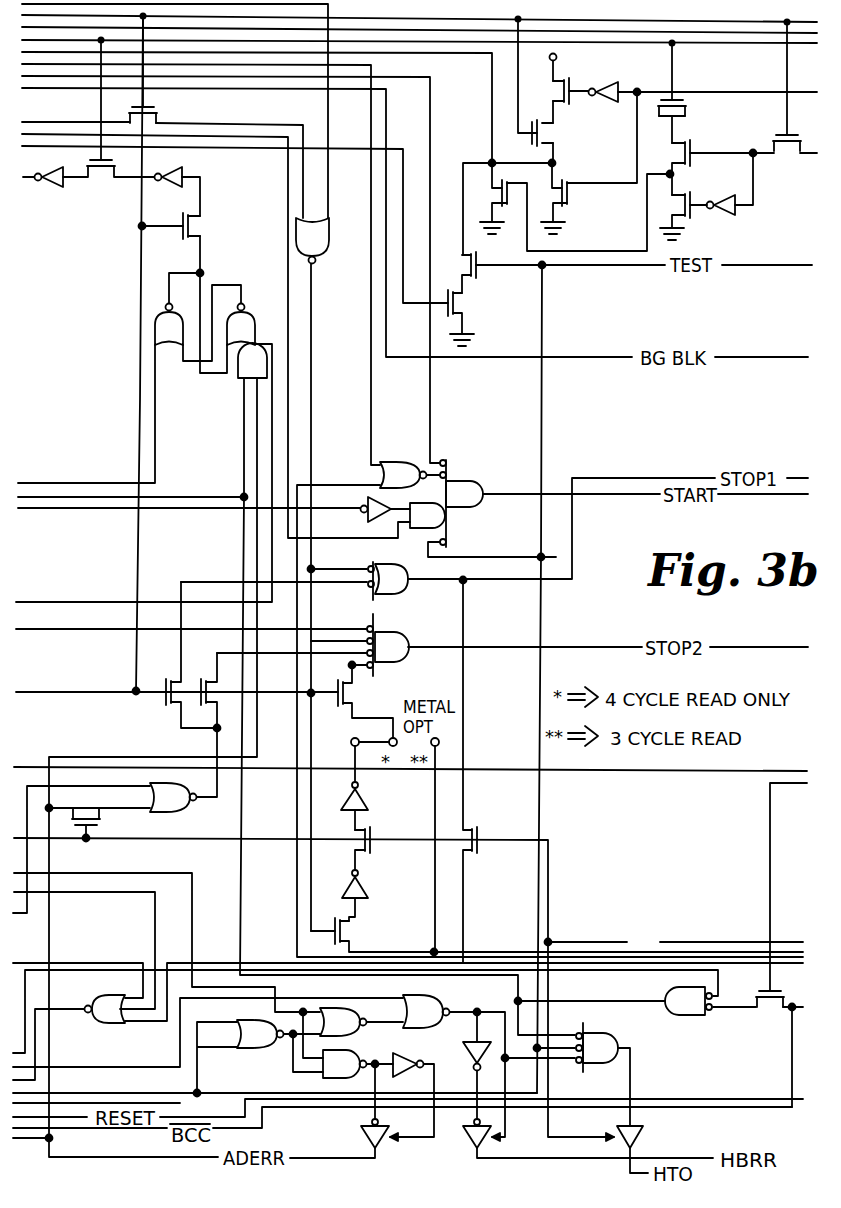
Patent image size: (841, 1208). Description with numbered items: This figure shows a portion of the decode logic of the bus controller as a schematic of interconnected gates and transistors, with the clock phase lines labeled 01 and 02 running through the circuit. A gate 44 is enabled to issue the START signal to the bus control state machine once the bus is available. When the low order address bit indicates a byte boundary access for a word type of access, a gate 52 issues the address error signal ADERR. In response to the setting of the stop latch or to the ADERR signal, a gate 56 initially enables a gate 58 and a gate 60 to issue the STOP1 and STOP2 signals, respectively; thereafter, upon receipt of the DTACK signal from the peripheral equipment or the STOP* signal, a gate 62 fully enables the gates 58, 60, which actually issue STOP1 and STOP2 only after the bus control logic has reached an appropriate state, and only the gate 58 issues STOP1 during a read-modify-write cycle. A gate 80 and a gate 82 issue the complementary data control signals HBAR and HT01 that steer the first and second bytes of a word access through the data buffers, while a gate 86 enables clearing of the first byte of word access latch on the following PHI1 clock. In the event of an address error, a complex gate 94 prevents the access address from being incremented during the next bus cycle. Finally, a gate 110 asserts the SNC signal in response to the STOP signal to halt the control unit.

The gate 44 is at (483, 470).
The gate 52 is at (355, 1054).
The gate 56 is at (183, 813).
The gate 58 is at (410, 595).
The gate 60 is at (406, 619).
The gate 62 is at (325, 220).
The gate 80 is at (441, 1000).
The gate 82 is at (609, 1035).
The gate 86 is at (689, 1017).
The complex gate 94 is at (222, 269).
The gate 110 is at (97, 1024).
The clock phase 1 signal 01 is at (675, 943).
The clock phase 2 signal 02 is at (141, 353).